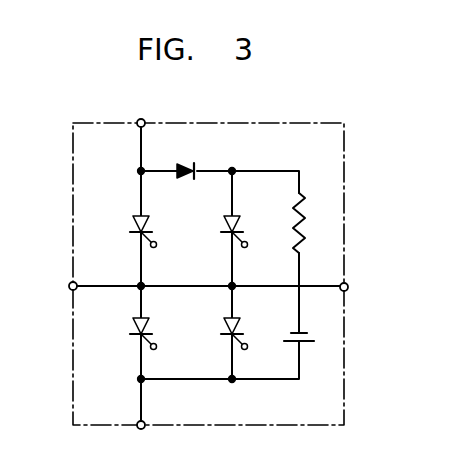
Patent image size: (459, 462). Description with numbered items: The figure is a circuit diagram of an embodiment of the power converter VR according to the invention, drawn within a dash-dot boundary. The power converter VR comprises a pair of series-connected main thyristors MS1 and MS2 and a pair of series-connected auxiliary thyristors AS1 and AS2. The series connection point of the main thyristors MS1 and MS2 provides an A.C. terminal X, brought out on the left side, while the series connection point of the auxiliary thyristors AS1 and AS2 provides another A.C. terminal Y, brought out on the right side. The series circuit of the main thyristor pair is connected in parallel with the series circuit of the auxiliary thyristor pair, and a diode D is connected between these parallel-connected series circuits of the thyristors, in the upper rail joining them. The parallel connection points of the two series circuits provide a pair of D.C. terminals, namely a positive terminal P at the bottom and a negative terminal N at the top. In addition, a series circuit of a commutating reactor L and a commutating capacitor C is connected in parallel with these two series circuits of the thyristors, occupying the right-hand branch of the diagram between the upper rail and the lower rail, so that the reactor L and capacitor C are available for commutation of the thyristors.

The negative terminal N is at (144, 118).
The power converter VR is at (243, 123).
The diode D is at (184, 165).
The main thyristor MS1 is at (148, 236).
The auxiliary thyristor AS1 is at (240, 236).
The commutating reactor L is at (306, 208).
The A.C. terminal X is at (70, 290).
The A.C. terminal Y is at (347, 291).
The main thyristor MS2 is at (148, 338).
The auxiliary thyristor AS2 is at (240, 338).
The commutating capacitor C is at (309, 343).
The positive terminal P is at (143, 420).